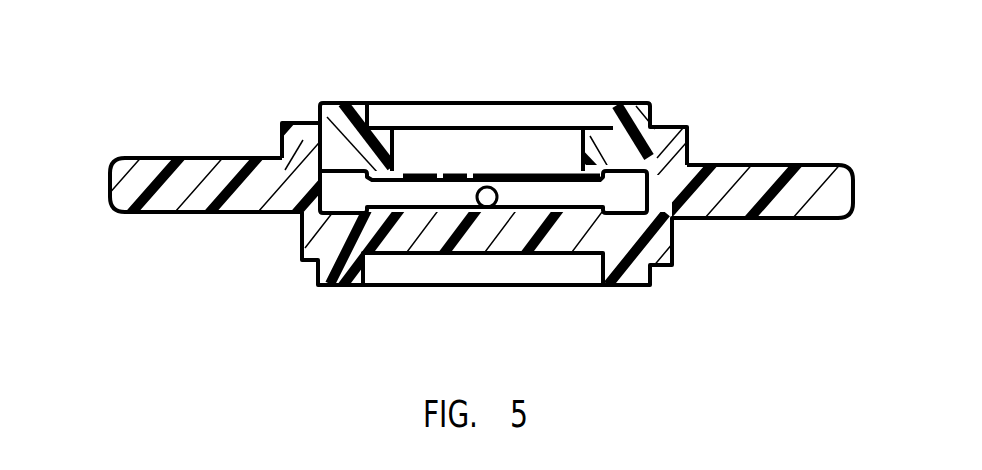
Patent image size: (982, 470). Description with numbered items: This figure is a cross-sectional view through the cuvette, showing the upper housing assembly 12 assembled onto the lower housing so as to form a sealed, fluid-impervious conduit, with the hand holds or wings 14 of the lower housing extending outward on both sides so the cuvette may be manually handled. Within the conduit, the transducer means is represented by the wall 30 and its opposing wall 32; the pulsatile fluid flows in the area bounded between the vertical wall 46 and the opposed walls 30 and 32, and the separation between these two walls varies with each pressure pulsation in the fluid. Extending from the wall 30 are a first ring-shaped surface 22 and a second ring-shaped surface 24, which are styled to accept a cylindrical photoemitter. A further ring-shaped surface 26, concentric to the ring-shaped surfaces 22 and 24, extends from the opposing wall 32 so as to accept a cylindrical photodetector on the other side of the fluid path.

The upper housing assembly 12 is at (328, 102).
The wings 14 is at (163, 157).
The first ring-shaped surface 22 is at (592, 135).
The second ring-shaped surface 24 is at (633, 104).
The ring-shaped surface 26 is at (623, 277).
The wall 30 is at (450, 173).
The opposing wall 32 is at (473, 254).
The vertical wall 46 is at (307, 183).